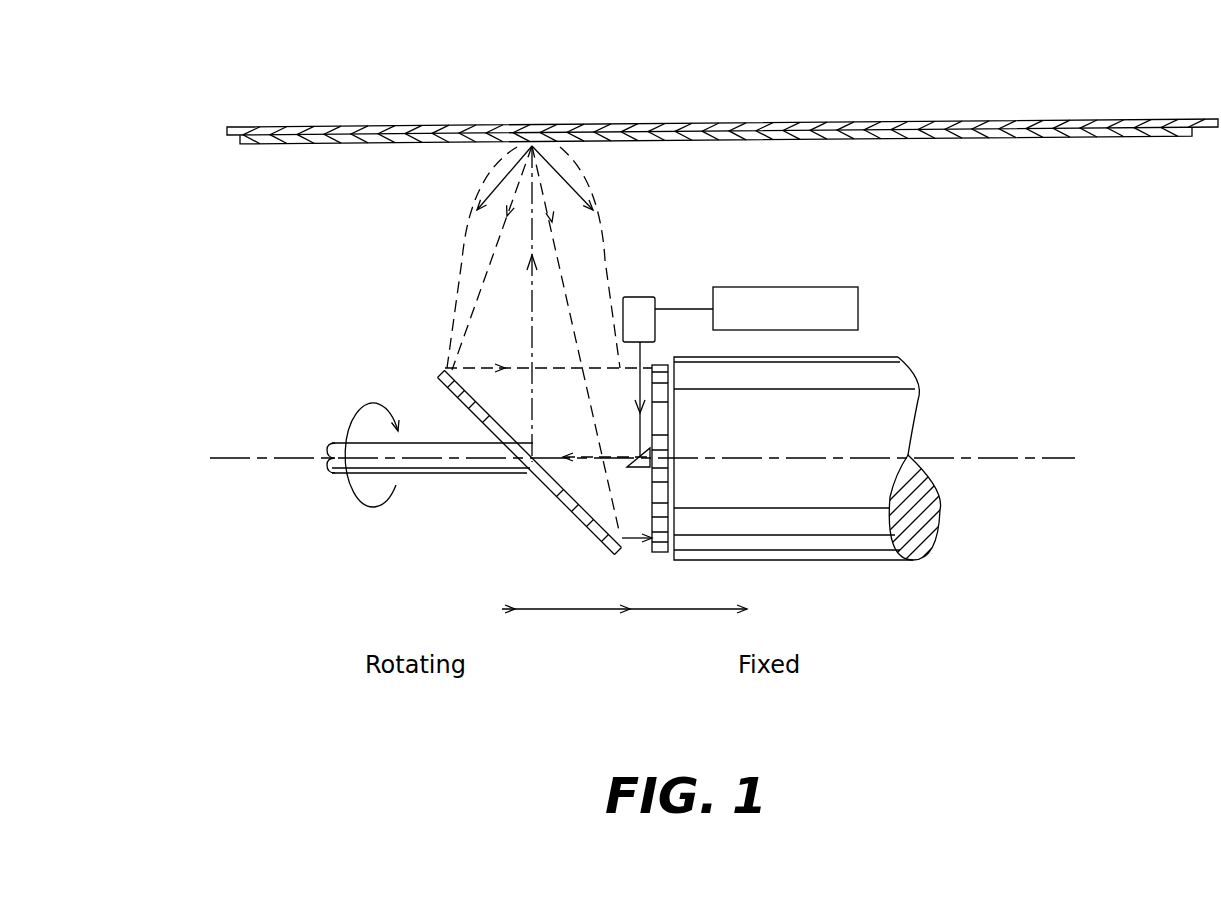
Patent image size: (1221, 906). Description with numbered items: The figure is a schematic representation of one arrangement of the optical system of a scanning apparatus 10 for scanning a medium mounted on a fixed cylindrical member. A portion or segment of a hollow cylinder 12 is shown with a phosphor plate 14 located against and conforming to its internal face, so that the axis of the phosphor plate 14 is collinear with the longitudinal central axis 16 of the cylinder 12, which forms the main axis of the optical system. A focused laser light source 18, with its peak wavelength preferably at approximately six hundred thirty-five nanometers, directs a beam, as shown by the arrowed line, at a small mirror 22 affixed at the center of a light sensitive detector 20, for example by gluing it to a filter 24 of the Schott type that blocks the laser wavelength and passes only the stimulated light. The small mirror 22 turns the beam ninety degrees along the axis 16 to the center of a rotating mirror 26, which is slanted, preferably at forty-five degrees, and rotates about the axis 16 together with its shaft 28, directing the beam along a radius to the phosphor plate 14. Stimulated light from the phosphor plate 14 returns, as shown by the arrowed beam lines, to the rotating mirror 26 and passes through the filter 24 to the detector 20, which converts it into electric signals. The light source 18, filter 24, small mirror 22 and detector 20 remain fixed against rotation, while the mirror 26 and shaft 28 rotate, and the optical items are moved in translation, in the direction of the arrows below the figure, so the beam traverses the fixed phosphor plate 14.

The scanning apparatus 10 is at (746, 62).
The hollow cylinder 12 is at (298, 125).
The phosphor plate 14 is at (845, 137).
The central axis 16 is at (272, 460).
The laser light source 18 is at (642, 297).
The light sensitive detector 20 is at (898, 357).
The small mirror 22 is at (650, 448).
The filter 24 is at (652, 557).
The rotating mirror 26 is at (443, 366).
The shaft 28 is at (480, 473).